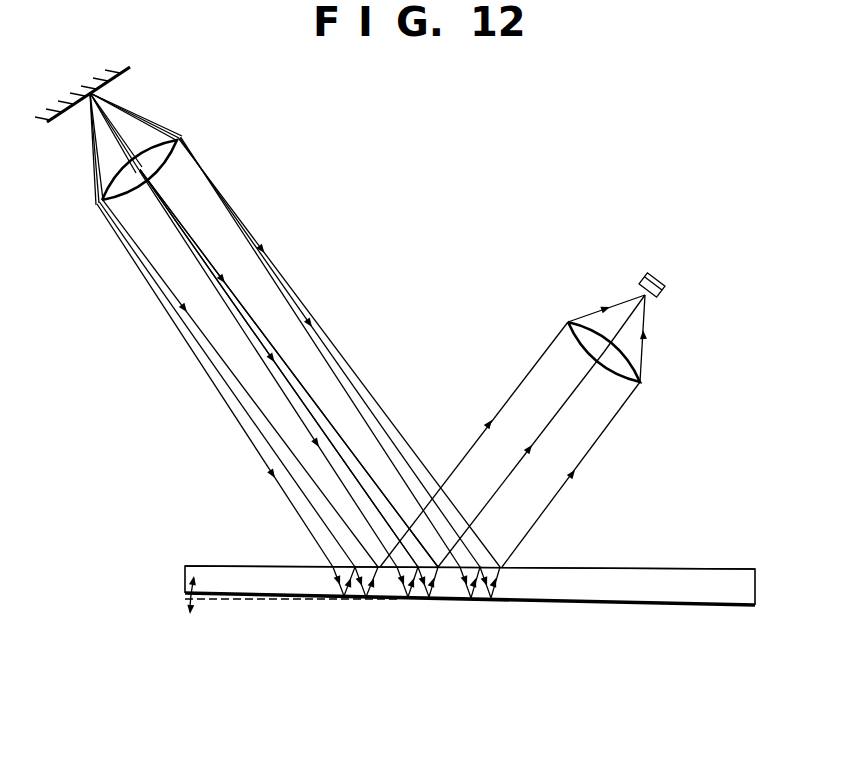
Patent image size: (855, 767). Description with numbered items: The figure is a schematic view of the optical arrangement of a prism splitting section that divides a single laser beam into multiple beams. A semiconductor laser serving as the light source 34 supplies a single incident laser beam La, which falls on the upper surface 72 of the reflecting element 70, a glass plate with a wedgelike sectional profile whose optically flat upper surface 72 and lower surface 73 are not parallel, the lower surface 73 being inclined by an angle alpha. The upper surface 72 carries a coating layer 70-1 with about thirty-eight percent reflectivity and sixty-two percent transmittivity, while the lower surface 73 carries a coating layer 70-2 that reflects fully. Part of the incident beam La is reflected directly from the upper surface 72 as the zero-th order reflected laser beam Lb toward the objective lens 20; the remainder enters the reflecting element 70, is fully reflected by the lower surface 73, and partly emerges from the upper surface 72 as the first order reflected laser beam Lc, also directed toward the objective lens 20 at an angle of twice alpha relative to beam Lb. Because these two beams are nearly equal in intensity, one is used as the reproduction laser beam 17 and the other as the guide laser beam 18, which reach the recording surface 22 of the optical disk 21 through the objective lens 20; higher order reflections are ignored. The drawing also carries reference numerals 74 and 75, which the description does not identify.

The reproduction laser beam 17 is at (276, 281).
The guide laser beam 18 is at (308, 318).
The objective lens 20 is at (181, 140).
The optical disk 21 is at (122, 83).
The recording surface 22 is at (60, 119).
The light source 34 is at (644, 278).
The reflecting element 70 is at (462, 594).
The coating layer 70-1 is at (585, 567).
The coating layer 70-2 is at (581, 601).
The upper surface 72 is at (706, 568).
The lower surface 73 is at (699, 604).
The reflected light 74 is at (378, 424).
The condenser lens 75 is at (642, 384).
The incident single laser beam La is at (535, 444).
The zero-th order reflected laser beam Lb is at (256, 327).
The first order reflected laser beam Lc is at (305, 390).